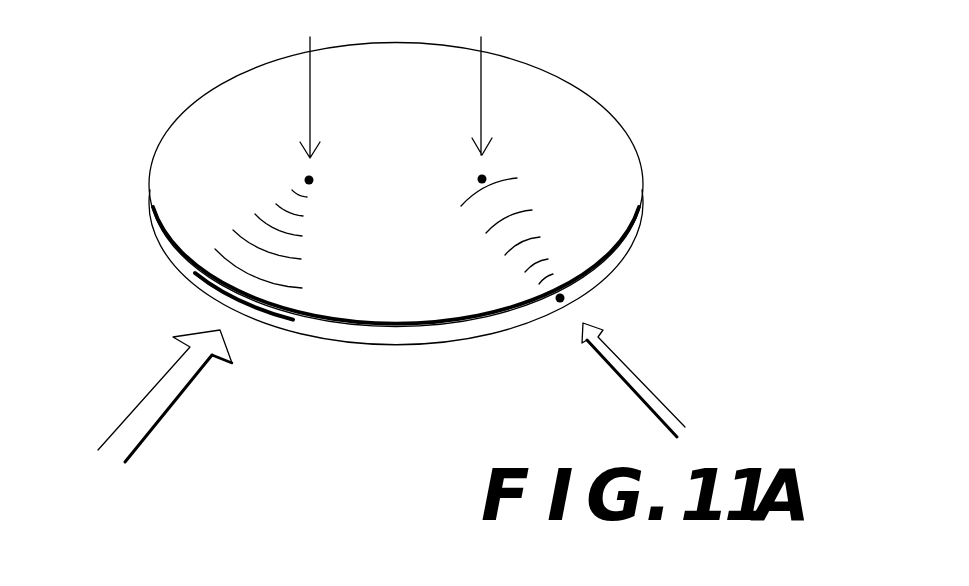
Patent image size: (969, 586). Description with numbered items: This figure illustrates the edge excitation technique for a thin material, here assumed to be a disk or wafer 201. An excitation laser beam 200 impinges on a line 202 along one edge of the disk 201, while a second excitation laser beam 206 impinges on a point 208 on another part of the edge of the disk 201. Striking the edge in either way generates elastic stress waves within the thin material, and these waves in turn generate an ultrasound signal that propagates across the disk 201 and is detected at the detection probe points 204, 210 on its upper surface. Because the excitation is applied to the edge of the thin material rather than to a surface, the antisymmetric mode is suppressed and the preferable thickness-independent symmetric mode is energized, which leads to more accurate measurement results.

The excitation laser beam 200 is at (158, 388).
The disk 201 is at (178, 173).
The line 202 is at (283, 320).
The detection probe point 204 is at (309, 42).
The excitation laser beam 206 is at (650, 388).
The point 208 is at (561, 298).
The detection probe point 210 is at (484, 43).